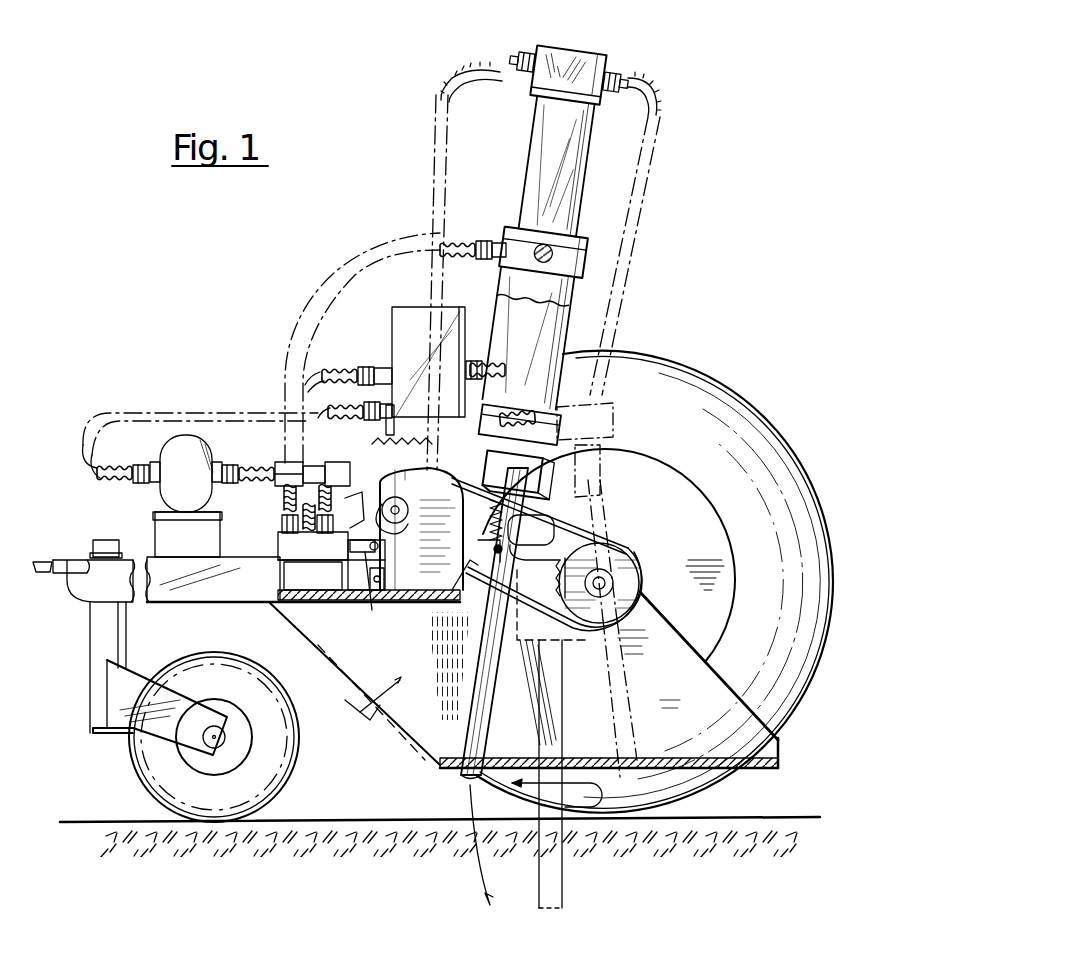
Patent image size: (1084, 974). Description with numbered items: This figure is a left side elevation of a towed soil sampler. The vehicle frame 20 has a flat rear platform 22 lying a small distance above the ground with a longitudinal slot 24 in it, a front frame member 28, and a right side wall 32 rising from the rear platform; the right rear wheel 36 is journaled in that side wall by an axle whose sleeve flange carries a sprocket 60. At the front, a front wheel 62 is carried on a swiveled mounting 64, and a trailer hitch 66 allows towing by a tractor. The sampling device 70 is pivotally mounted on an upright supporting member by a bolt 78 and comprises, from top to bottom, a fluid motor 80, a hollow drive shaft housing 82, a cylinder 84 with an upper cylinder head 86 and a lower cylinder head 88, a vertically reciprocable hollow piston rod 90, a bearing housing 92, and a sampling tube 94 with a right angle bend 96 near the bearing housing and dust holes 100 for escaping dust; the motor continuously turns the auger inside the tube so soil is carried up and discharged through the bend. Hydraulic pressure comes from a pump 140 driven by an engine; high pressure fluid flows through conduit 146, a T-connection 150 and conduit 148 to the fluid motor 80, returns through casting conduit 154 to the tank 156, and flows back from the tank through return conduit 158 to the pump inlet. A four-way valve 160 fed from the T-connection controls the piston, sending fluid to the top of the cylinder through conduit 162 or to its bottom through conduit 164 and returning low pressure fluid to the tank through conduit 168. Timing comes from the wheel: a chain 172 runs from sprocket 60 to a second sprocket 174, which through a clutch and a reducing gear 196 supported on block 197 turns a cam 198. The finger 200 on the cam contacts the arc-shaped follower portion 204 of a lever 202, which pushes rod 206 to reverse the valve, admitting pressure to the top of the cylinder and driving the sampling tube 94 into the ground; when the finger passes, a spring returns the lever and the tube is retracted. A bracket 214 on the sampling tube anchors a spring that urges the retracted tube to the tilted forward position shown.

The vehicle frame 20 is at (400, 725).
The rear platform 22 is at (750, 762).
The longitudinal slot 24 is at (585, 772).
The front frame member 28 is at (205, 605).
The right side wall 32 is at (360, 705).
The right rear wheel 36 is at (765, 425).
The sprocket 60 is at (560, 570).
The front wheel 62 is at (285, 772).
The swiveled mounting 64 is at (100, 738).
The trailer hitch 66 is at (45, 560).
The sampling device 70 is at (561, 256).
The bolt 78 is at (540, 229).
The fluid motor 80 is at (571, 60).
The drive shaft housing 82 is at (575, 169).
The cylinder 84 is at (511, 336).
The upper cylinder head 86 is at (559, 244).
The lower cylinder head 88 is at (585, 421).
The piston rod 90 is at (502, 427).
The bearing housing 92 is at (518, 474).
The sampling tube 94 is at (478, 718).
The right angle bend 96 is at (548, 515).
The dust holes 100 is at (486, 520).
The pump 140 is at (212, 492).
The conduit 146 is at (240, 480).
The conduit 148 is at (447, 80).
The T-connection 150 is at (295, 468).
The casting conduit 154 is at (657, 112).
The tank 156 is at (412, 312).
The return conduit 158 is at (90, 478).
The four-way valve 160 is at (331, 547).
The conduit 162 is at (455, 248).
The conduit 164 is at (322, 440).
The conduit 168 is at (358, 372).
The chain 172 is at (615, 548).
The second sprocket 174 is at (483, 549).
The reducing gear 196 is at (418, 470).
The block 197 is at (384, 596).
The cam 198 is at (405, 503).
The finger 200 is at (383, 546).
The lever 202 is at (385, 583).
The follower portion 204 is at (352, 505).
The rod 206 is at (365, 590).
The bracket 214 is at (465, 588).